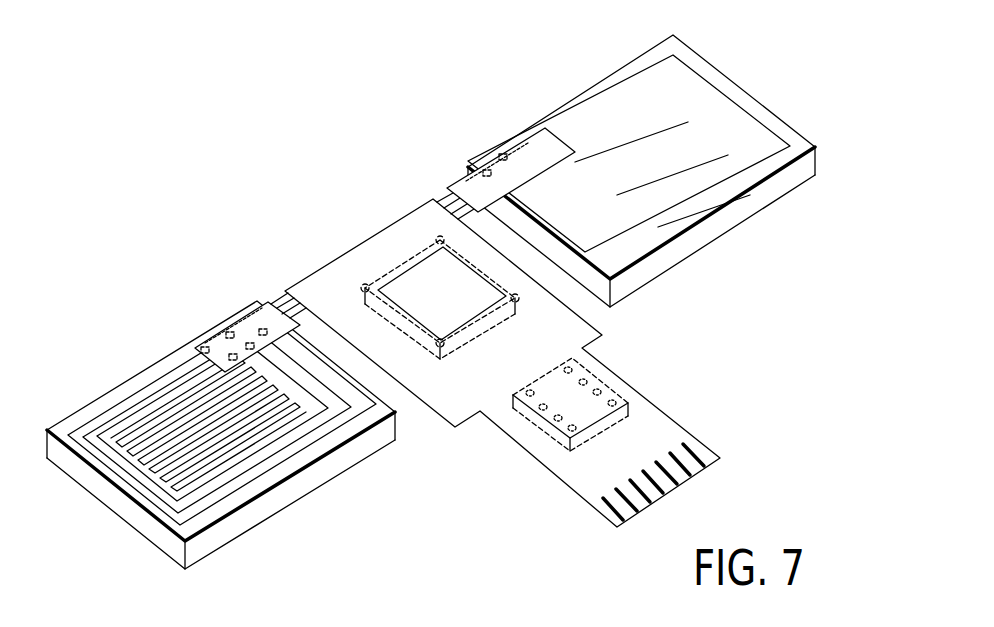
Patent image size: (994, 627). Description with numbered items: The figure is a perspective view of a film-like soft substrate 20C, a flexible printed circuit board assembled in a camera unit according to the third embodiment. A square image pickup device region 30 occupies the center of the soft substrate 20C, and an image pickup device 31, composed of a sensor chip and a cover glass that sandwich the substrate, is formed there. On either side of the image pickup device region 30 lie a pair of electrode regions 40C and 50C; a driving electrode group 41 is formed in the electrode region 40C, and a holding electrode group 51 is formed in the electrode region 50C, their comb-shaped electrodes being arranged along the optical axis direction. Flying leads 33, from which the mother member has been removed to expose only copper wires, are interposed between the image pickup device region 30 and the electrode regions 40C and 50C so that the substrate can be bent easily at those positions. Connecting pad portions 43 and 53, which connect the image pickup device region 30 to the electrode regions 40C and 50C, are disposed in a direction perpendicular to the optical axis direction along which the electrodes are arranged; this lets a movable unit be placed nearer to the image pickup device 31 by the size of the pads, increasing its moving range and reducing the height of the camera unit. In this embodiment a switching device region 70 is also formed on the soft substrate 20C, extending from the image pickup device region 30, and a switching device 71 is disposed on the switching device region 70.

The soft substrate 20C is at (398, 184).
The image pickup device region 30 is at (403, 234).
The image pickup device 31 is at (412, 283).
The flying leads 33 is at (284, 294).
The electrode region 40C is at (298, 485).
The driving electrode group 41 is at (232, 494).
The connecting pad portion 43 is at (253, 327).
The electrode region 50C is at (627, 249).
The holding electrode group 51 is at (697, 208).
The connecting pad portion 53 is at (537, 157).
The switching device region 70 is at (610, 510).
The switching device 71 is at (560, 402).